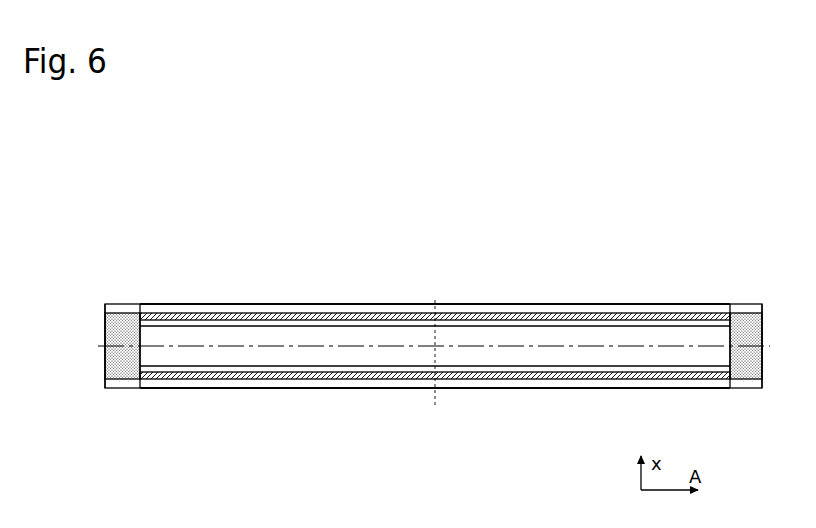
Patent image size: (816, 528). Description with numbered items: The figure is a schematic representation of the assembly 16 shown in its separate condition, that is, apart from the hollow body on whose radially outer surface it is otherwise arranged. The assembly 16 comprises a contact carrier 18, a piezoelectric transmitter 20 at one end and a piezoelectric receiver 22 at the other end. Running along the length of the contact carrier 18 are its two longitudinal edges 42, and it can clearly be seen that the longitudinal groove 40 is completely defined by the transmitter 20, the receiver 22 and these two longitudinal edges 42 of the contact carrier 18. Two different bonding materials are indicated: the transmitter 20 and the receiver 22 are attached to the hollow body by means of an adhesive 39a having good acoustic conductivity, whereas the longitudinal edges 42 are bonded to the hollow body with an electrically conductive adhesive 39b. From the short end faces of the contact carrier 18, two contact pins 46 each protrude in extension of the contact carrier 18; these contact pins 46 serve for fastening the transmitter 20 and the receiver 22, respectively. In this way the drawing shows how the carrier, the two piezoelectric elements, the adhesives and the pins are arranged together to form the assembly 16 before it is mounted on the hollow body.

The assembly 16 is at (666, 232).
The contact carrier 18 is at (499, 302).
The piezoelectric transmitter 20 is at (103, 322).
The piezoelectric receiver 22 is at (768, 315).
The adhesive 39a is at (110, 334).
The electrically conductive adhesive 39b is at (160, 317).
The longitudinal groove 40 is at (225, 342).
The longitudinal edges 42 is at (328, 308).
The contact pins 46 is at (116, 311).